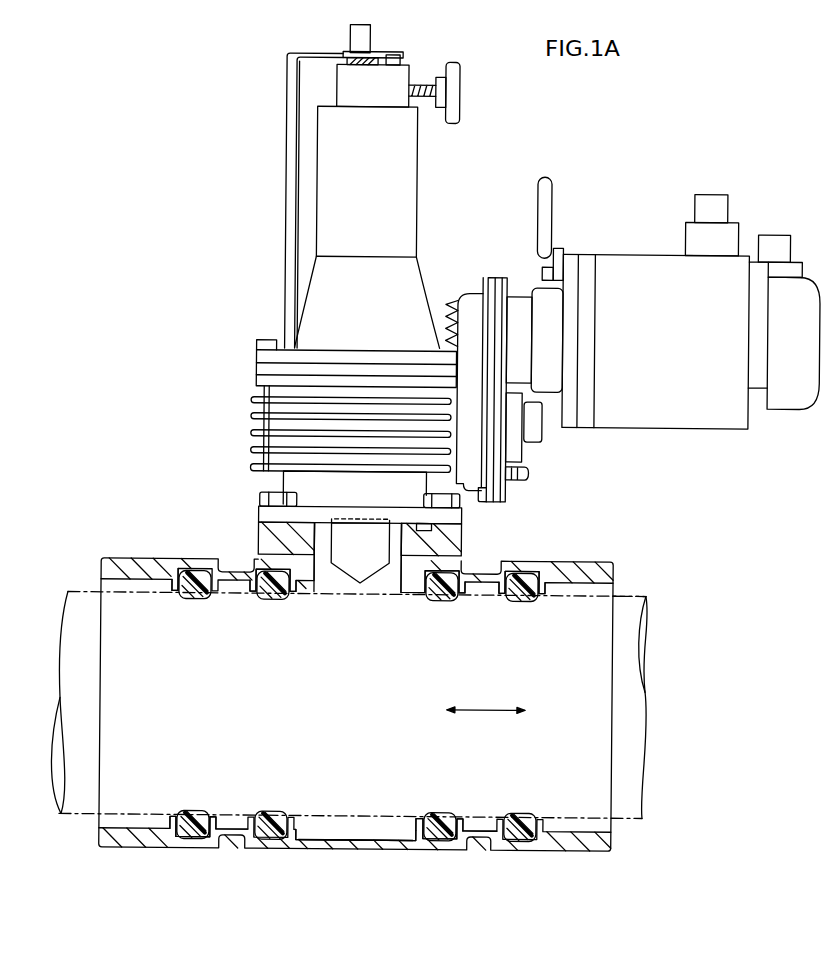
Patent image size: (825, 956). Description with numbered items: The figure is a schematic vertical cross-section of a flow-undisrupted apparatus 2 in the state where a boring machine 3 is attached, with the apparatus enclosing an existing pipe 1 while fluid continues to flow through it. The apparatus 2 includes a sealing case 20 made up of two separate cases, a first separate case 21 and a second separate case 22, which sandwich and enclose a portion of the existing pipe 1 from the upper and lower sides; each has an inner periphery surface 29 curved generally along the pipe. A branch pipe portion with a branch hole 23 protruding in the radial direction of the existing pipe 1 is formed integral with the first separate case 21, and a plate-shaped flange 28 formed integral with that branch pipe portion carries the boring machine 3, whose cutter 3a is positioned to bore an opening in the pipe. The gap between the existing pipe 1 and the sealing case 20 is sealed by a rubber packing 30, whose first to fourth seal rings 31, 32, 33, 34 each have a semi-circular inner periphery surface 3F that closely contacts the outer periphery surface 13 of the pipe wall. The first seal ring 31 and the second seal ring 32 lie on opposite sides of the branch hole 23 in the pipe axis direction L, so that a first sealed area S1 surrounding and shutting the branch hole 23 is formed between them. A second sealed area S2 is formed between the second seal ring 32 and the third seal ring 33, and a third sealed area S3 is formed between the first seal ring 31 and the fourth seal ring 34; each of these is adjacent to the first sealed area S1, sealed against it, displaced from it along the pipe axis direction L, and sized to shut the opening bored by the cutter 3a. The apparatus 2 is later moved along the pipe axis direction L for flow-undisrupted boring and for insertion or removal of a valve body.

The existing pipe 1 is at (650, 663).
The flow-undisrupted apparatus 2 is at (207, 354).
The boring machine 3 is at (405, 192).
The cutter 3a is at (360, 555).
The inner periphery surface 3F is at (193, 602).
The outer periphery surface 13 is at (631, 594).
The sealing case 20 is at (367, 697).
The first separate case 21 is at (131, 560).
The second separate case 22 is at (124, 850).
The branch hole 23 is at (322, 556).
The flange 28 is at (256, 540).
The inner periphery surface 29 is at (330, 843).
The rubber packing 30 is at (179, 807).
The first seal ring 31 is at (275, 602).
The second seal ring 32 is at (439, 601).
The third seal ring 33 is at (528, 601).
The fourth seal ring 34 is at (178, 593).
The first sealed area S1 is at (363, 838).
The second sealed area S2 is at (480, 817).
The third sealed area S3 is at (233, 827).
The pipe axis direction L is at (486, 694).